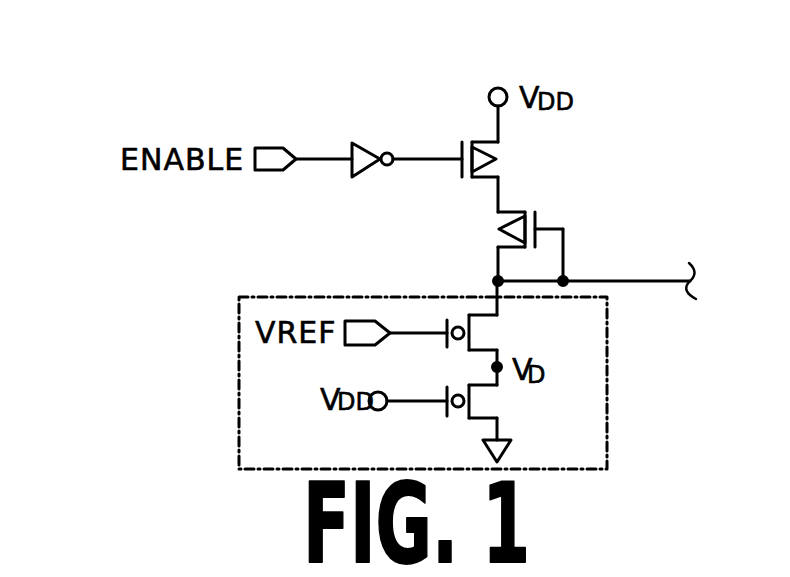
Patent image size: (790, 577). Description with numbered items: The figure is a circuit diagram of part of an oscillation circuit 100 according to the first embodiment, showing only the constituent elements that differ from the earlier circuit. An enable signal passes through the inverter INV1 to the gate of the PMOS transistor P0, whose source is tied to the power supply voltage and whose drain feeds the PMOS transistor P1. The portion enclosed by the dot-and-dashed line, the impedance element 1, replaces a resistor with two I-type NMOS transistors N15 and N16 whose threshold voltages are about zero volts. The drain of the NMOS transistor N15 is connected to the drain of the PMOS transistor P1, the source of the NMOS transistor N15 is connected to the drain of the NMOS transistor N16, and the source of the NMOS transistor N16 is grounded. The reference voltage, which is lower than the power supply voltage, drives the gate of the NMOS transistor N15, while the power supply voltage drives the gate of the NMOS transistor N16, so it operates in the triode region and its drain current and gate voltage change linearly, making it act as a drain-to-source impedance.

The semiconductor device / output circuit 100 is at (151, 76).
The impedance element 1 is at (607, 373).
The inverter INV1 is at (364, 145).
The P-channel MOS transistor P0 is at (507, 160).
The PMOS transistor P1 is at (489, 229).
The NMOS transistor N15 is at (488, 333).
The NMOS transistor N16 is at (488, 400).